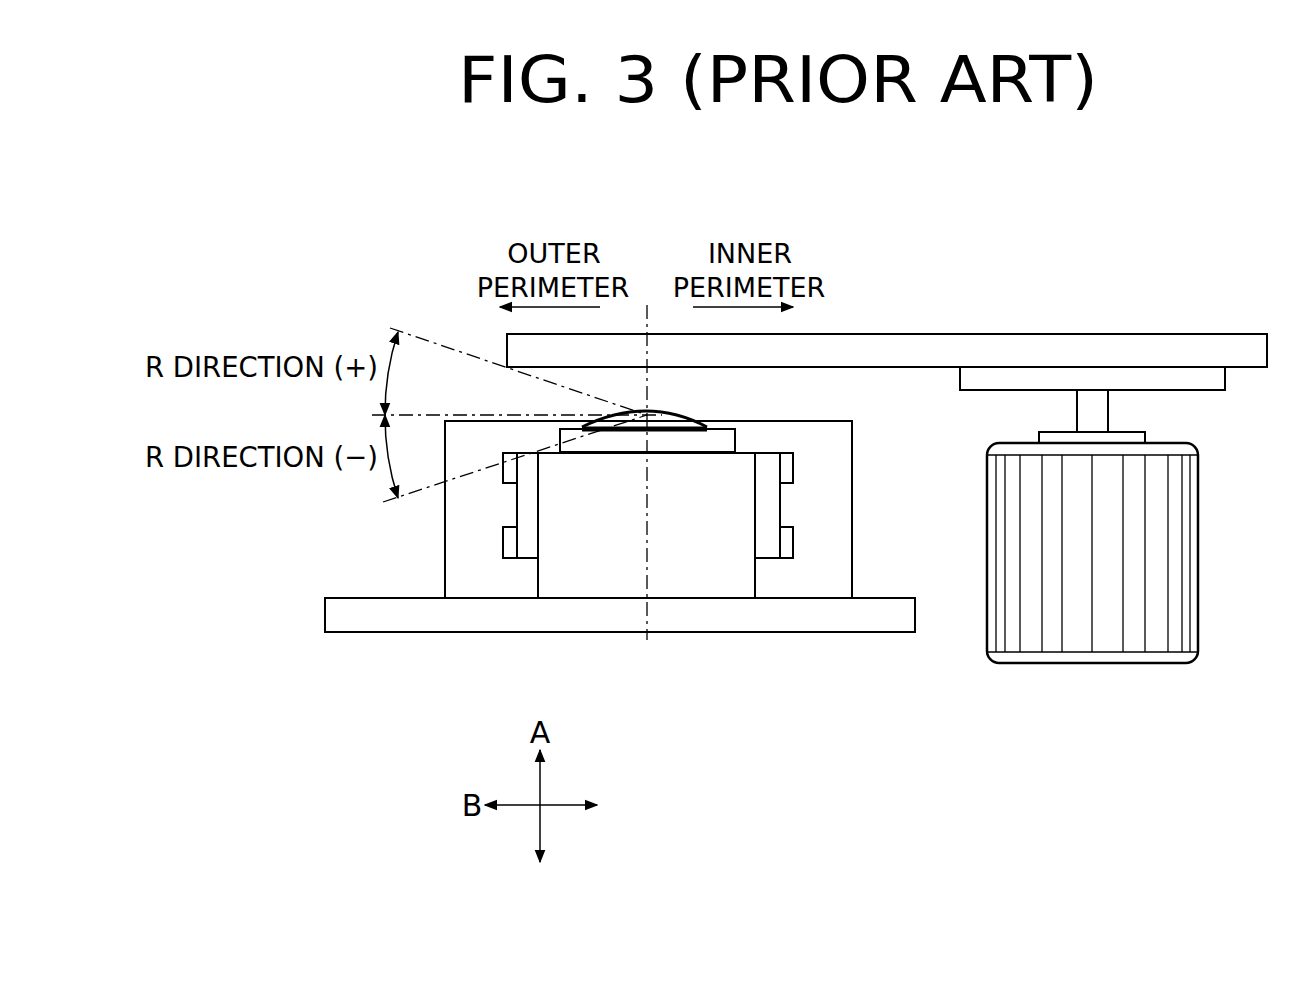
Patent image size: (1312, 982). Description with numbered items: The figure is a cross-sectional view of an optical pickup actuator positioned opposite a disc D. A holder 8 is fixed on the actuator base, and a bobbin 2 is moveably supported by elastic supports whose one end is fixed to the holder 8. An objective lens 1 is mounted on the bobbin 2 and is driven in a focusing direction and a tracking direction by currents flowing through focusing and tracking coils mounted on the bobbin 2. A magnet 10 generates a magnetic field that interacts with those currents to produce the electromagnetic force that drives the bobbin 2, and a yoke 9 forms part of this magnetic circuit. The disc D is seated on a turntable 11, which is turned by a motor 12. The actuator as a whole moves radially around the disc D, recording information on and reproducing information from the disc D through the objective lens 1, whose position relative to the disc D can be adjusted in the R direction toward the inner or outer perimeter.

The objective lens 1 is at (667, 418).
The bobbin 2 is at (770, 545).
The holder 8 is at (842, 483).
The yoke 9 is at (668, 578).
The magnet 10 is at (722, 442).
The turntable 11 is at (1020, 375).
The motor 12 is at (1198, 545).
The disc D is at (907, 345).